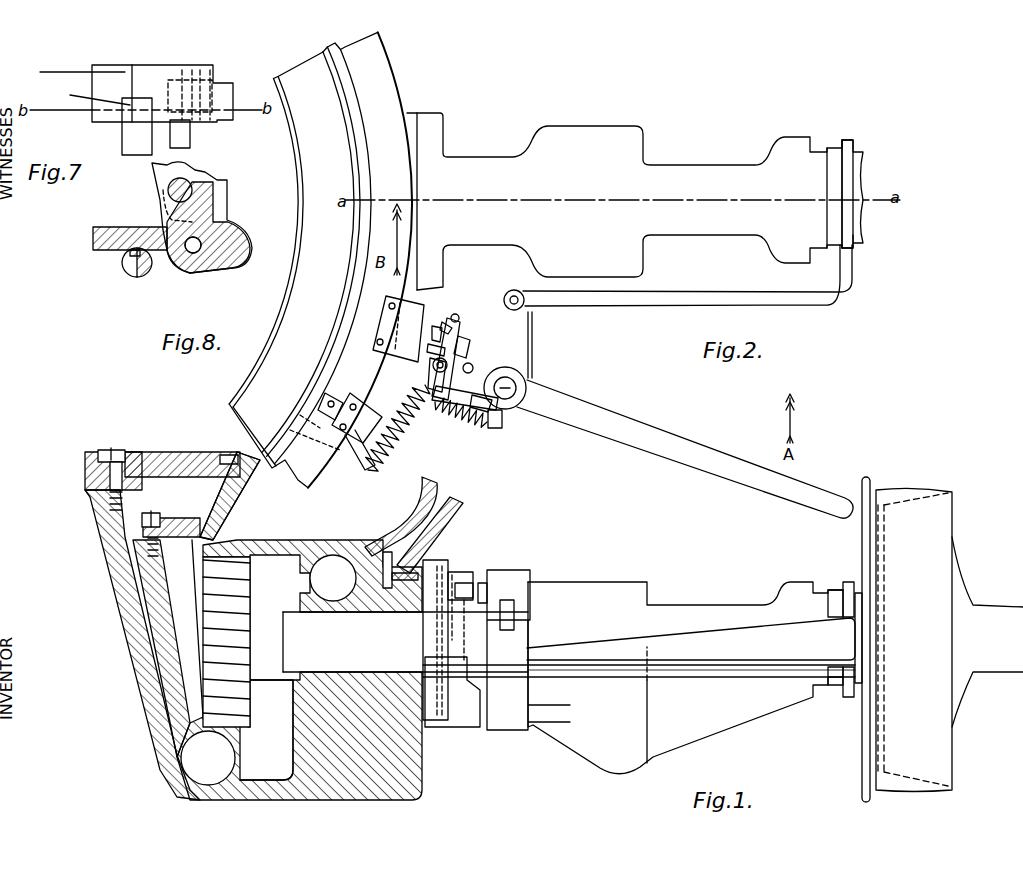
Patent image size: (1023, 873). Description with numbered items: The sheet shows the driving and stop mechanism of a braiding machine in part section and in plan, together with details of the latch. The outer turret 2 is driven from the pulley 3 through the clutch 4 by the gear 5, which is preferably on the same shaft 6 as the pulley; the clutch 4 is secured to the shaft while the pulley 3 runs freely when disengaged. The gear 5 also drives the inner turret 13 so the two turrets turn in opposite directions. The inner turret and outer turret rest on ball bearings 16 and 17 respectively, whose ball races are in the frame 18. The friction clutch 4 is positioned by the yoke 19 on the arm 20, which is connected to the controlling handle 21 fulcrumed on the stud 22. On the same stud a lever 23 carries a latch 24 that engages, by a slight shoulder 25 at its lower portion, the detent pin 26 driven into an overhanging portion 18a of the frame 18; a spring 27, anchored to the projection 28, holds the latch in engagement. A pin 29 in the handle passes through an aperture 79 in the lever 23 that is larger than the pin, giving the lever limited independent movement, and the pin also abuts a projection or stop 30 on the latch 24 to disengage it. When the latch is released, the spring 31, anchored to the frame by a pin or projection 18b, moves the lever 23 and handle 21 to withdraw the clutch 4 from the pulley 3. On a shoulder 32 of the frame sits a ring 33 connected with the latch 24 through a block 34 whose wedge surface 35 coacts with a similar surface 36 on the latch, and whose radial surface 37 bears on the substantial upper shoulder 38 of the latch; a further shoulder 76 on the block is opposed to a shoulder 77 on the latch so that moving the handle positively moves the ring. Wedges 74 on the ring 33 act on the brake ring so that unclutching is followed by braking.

In FIG. 1, the outer turret 2 is at (437, 481).
In FIG. 1, the pulley 3 is at (893, 486).
In FIG. 1, the clutch 4 is at (952, 524).
In FIG. 1, the gear 5 is at (247, 581).
In FIG. 1, the shaft 6 is at (405, 642).
In FIG. 1, the inner turret 13 is at (160, 587).
In FIG. 1, the ball bearing 16 is at (208, 758).
In FIG. 1, the ball bearing 17 is at (333, 578).
In FIG. 2, the frame 18 is at (257, 383).
In FIG. 1, the frame 18 is at (353, 782).
In FIG. 2, the overhanging portion 18a is at (534, 358).
In FIG. 1, the overhanging portion 18a is at (470, 717).
In FIG. 1, the pin or projection 18b is at (275, 496).
In FIG. 2, the yoke 19 is at (855, 143).
In FIG. 1, the yoke 19 is at (848, 582).
In FIG. 2, the arm 20 is at (803, 298).
In FIG. 1, the arm 20 is at (720, 675).
In FIG. 2, the controlling handle 21 is at (633, 427).
In FIG. 1, the controlling handle 21 is at (743, 648).
In FIG. 2, the stud 22 is at (515, 388).
In FIG. 1, the stud 22 is at (504, 607).
In FIG. 2, the lever 23 is at (508, 362).
In FIG. 1, the lever 23 is at (528, 593).
In FIG. 2, the latch 24 is at (458, 320).
In FIG. 1, the latch 24 is at (456, 580).
In FIG. 7, the latch 24 is at (143, 65).
In FIG. 8, the latch 24 is at (93, 237).
In FIG. 7, the shoulder 25 is at (89, 96).
In FIG. 8, the shoulder 25 is at (132, 254).
In FIG. 2, the detent pin 26 is at (460, 340).
In FIG. 1, the detent pin 26 is at (442, 636).
In FIG. 7, the detent pin 26 is at (128, 135).
In FIG. 8, the detent pin 26 is at (138, 279).
In FIG. 2, the spring 27 is at (467, 417).
In FIG. 2, the projection 28 is at (500, 427).
In FIG. 7, the projection 28 is at (73, 74).
In FIG. 2, the pin 29 is at (470, 353).
In FIG. 1, the pin 29 is at (486, 580).
In FIG. 7, the pin 29 is at (185, 135).
In FIG. 8, the pin 29 is at (170, 192).
In FIG. 2, the projection or stop 30 is at (479, 410).
In FIG. 1, the projection or stop 30 is at (461, 580).
In FIG. 7, the projection or stop 30 is at (233, 95).
In FIG. 8, the projection or stop 30 is at (214, 203).
In FIG. 2, the spring 31 is at (386, 444).
In FIG. 1, the shoulder 32 is at (402, 577).
In FIG. 1, the ring 33 is at (423, 578).
In FIG. 2, the projection or block 34 is at (393, 330).
In FIG. 2, the inclined or wedge surface 35 is at (453, 314).
In FIG. 2, the wedge surface 36 is at (504, 304).
In FIG. 2, the radial surface 37 is at (437, 327).
In FIG. 2, the shoulder 38 is at (447, 322).
In FIG. 2, the wedges 74 is at (333, 403).
In FIG. 2, the shoulder 76 is at (430, 346).
In FIG. 2, the shoulder 77 is at (432, 360).
In FIG. 2, the aperture 79 is at (468, 362).
In FIG. 8, the aperture 79 is at (207, 183).